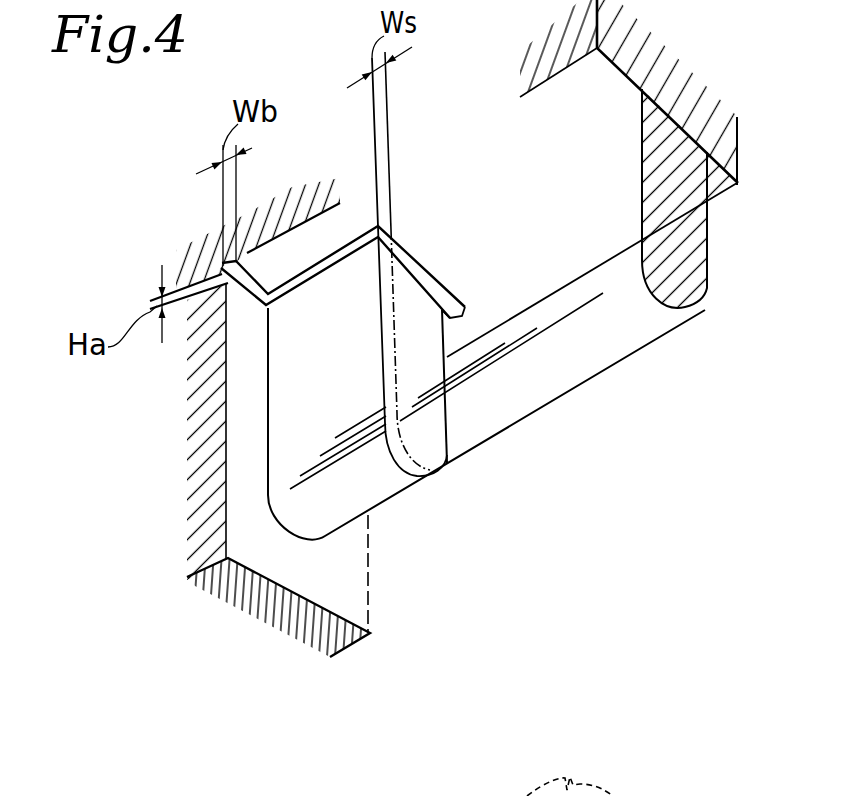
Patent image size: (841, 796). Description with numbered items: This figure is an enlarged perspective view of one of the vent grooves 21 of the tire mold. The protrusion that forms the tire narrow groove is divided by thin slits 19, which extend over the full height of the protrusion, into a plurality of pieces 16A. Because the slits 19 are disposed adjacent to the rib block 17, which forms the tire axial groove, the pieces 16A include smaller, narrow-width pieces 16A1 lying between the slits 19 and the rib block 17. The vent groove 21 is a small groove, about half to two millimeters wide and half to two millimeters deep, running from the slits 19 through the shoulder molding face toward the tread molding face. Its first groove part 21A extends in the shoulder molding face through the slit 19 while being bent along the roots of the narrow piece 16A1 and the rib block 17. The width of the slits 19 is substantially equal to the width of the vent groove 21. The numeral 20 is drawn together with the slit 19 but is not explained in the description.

The pieces 16A is at (502, 415).
The smaller pieces 16A1 is at (387, 505).
The rib block 17 is at (345, 672).
The thin slits 19 is at (397, 348).
The weather strip 20 is at (426, 475).
The first groove part 21A is at (380, 215).
The vent groove 21 is at (445, 289).